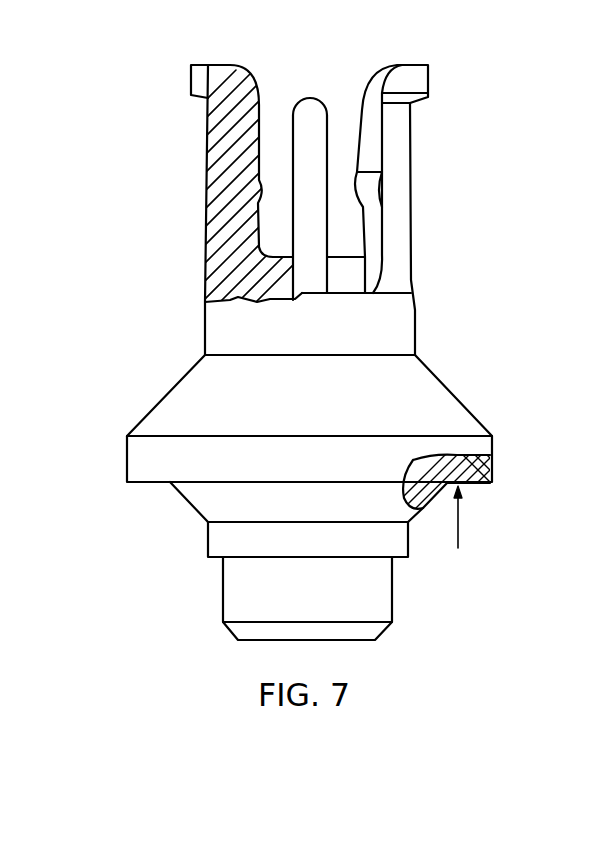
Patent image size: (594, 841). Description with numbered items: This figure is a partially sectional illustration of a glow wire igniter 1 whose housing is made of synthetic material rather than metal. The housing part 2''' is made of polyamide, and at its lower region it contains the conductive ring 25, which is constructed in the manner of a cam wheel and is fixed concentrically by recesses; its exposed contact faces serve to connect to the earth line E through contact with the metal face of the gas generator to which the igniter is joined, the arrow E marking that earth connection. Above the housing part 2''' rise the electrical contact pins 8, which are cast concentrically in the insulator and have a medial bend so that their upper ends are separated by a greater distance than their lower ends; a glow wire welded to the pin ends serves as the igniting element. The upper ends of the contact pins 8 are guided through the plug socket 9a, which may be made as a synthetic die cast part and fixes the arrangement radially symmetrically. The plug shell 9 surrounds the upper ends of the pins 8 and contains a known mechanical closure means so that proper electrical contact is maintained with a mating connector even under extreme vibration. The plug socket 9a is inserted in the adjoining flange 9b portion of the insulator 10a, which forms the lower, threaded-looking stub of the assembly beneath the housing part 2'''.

The glow wire igniter 1 is at (433, 292).
The housing part 2''' is at (333, 418).
The electrical contact pin 8 is at (308, 112).
The plug shell 9 is at (259, 175).
The plug socket 9a is at (215, 325).
The flange 9b is at (218, 537).
The insulator 10a is at (235, 591).
The conductive ring 25 is at (487, 467).
The earth ground E is at (466, 517).